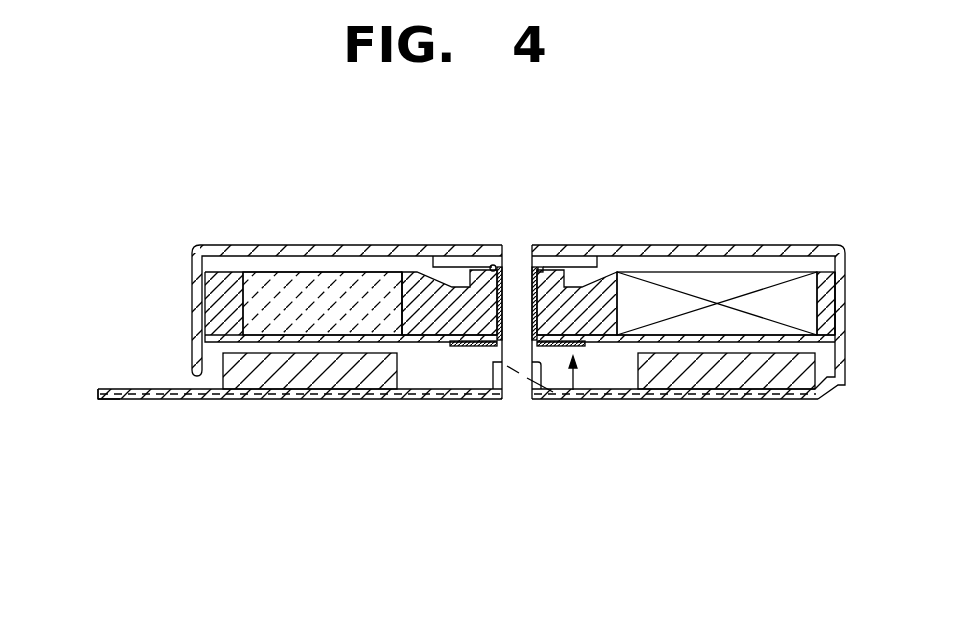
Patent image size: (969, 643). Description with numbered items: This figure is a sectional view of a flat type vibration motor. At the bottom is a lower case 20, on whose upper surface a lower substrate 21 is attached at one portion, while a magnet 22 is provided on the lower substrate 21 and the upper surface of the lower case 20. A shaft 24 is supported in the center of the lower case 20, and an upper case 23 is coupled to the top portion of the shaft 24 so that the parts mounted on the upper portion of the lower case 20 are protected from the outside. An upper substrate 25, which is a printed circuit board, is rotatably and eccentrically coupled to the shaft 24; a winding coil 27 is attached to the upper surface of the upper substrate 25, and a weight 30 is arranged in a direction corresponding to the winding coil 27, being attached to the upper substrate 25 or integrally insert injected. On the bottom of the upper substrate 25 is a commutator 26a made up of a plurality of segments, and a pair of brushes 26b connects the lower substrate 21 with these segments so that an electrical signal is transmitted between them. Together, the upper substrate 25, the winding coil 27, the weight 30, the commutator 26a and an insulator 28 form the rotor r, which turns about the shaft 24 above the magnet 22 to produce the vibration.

The lower case 20 is at (183, 400).
The lower substrate 21 is at (120, 389).
The magnet 22 is at (320, 380).
The upper case 23 is at (245, 247).
The shaft 24 is at (518, 270).
The upper substrate 25 is at (602, 346).
The commutator 26a is at (450, 346).
The brushes 26b is at (487, 348).
The winding coil 27 is at (717, 280).
The insulator 28 is at (430, 275).
The weight 30 is at (357, 275).
The rotor r is at (573, 398).